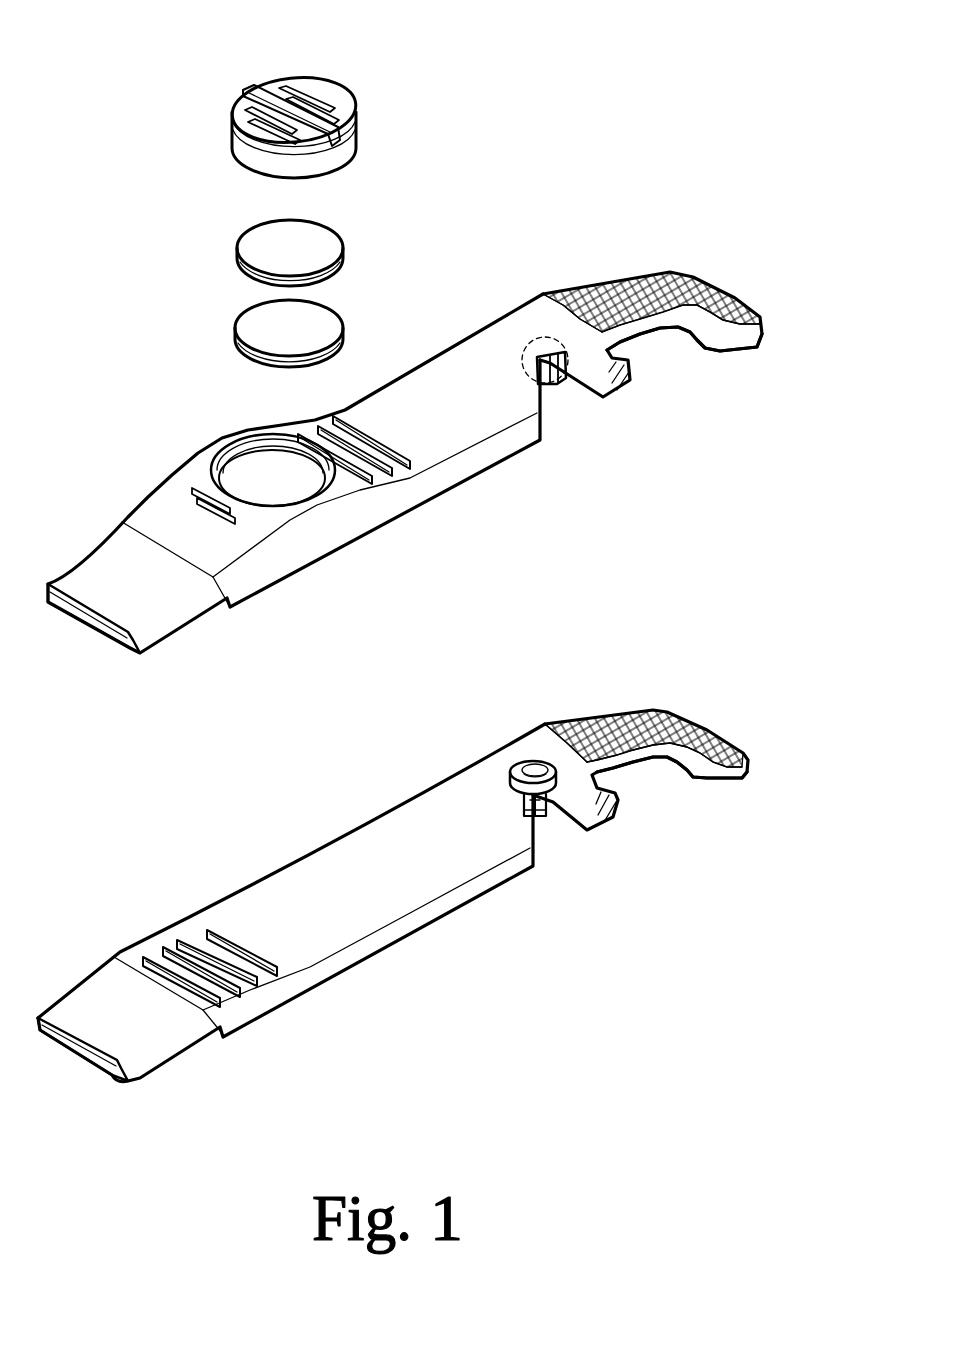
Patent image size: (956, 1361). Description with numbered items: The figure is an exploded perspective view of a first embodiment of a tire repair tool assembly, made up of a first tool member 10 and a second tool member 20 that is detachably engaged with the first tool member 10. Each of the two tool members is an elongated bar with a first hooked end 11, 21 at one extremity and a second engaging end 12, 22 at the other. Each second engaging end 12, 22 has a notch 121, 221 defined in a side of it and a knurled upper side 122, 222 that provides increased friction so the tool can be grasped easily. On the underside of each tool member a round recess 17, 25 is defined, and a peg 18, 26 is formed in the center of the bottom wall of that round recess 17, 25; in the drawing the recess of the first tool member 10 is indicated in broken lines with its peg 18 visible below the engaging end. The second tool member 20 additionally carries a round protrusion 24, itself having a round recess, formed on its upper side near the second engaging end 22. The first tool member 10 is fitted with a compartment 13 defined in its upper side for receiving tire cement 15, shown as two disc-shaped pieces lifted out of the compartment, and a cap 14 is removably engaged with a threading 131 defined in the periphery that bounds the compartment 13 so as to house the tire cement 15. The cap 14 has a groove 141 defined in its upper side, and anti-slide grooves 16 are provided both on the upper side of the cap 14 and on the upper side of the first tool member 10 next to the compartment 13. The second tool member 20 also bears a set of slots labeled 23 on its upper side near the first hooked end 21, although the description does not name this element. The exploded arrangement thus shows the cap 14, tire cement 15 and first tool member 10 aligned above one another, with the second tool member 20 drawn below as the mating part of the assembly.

The first tool member 10 is at (385, 505).
The first hooked end 11 is at (84, 612).
The second engaging end 12 is at (720, 305).
The notch 121 is at (662, 341).
The knurled upper side 122 is at (630, 290).
The compartment 13 is at (247, 478).
The threading 131 is at (248, 450).
The cap 14 is at (233, 137).
The groove 141 is at (253, 92).
The tire cement 15 is at (327, 250).
The anti-slide grooves 16 is at (317, 80).
The round recess 17 is at (558, 384).
The peg 18 is at (546, 386).
The second tool member 20 is at (365, 965).
The first hooked end 21 is at (90, 1058).
The second engaging end 22 is at (703, 740).
The notch 221 is at (655, 785).
The knurled upper side 222 is at (640, 715).
The slots of second body 23 is at (213, 928).
The round protrusion 24 is at (528, 752).
The round recess 25 is at (545, 812).
The peg 26 is at (531, 818).